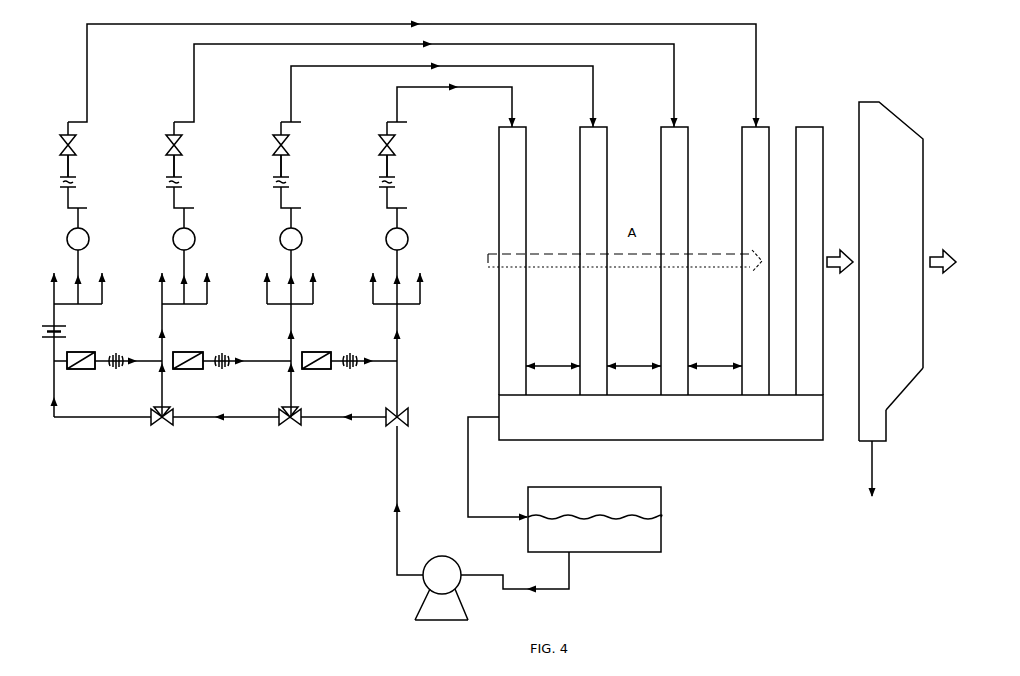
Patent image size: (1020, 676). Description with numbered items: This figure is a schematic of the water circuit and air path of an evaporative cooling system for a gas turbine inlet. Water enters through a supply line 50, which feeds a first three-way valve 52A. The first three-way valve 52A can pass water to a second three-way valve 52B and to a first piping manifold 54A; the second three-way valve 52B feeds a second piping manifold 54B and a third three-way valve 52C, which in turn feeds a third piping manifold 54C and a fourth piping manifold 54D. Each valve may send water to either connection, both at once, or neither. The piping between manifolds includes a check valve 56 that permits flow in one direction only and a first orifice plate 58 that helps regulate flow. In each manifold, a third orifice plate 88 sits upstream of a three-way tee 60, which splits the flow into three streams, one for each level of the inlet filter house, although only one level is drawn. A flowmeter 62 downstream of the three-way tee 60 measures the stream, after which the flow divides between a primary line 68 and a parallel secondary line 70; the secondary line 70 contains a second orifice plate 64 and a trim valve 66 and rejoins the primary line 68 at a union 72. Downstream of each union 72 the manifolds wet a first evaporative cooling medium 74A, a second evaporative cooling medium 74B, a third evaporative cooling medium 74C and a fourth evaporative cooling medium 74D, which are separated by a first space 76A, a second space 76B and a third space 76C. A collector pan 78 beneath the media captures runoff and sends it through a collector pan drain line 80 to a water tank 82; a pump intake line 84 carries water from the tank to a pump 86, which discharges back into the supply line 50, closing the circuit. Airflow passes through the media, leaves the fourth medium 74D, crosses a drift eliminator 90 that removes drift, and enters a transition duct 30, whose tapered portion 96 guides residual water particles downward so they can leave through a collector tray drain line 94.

The transition duct 30 is at (924, 330).
The supply line 50 is at (398, 466).
The first three-way valve 52A is at (388, 425).
The second three-way valve 52B is at (282, 425).
The third three-way valve 52C is at (156, 425).
The first piping manifold 54A is at (400, 346).
The second piping manifold 54B is at (303, 350).
The third piping manifold 54C is at (174, 350).
The fourth piping manifold 54D is at (68, 350).
The check valve 56 is at (319, 393).
The first orifice plate 58 is at (353, 393).
The three-way tee 60 is at (437, 290).
The flowmeter 62 is at (423, 241).
The second orifice plate 64 is at (385, 192).
The trim valve 66 is at (386, 133).
The primary line 68 is at (423, 184).
The secondary line 70 is at (423, 162).
The union 72 is at (407, 121).
The first evaporative cooling medium 74A is at (498, 142).
The second evaporative cooling medium 74B is at (579, 142).
The third evaporative cooling medium 74C is at (660, 142).
The fourth evaporative cooling medium 74D is at (741, 142).
The first space 76A is at (552, 361).
The second space 76B is at (634, 361).
The third space 76C is at (715, 361).
The collector pan 78 is at (706, 442).
The collector pan drain line 80 is at (469, 466).
The water tank 82 is at (900, 432).
The pump intake line 84 is at (519, 586).
The pump 86 is at (442, 555).
The third orifice plate 88 is at (67, 329).
The drift eliminator 90 is at (809, 125).
The collector tray drain line 94 is at (873, 466).
The tapered portion 96 is at (907, 390).